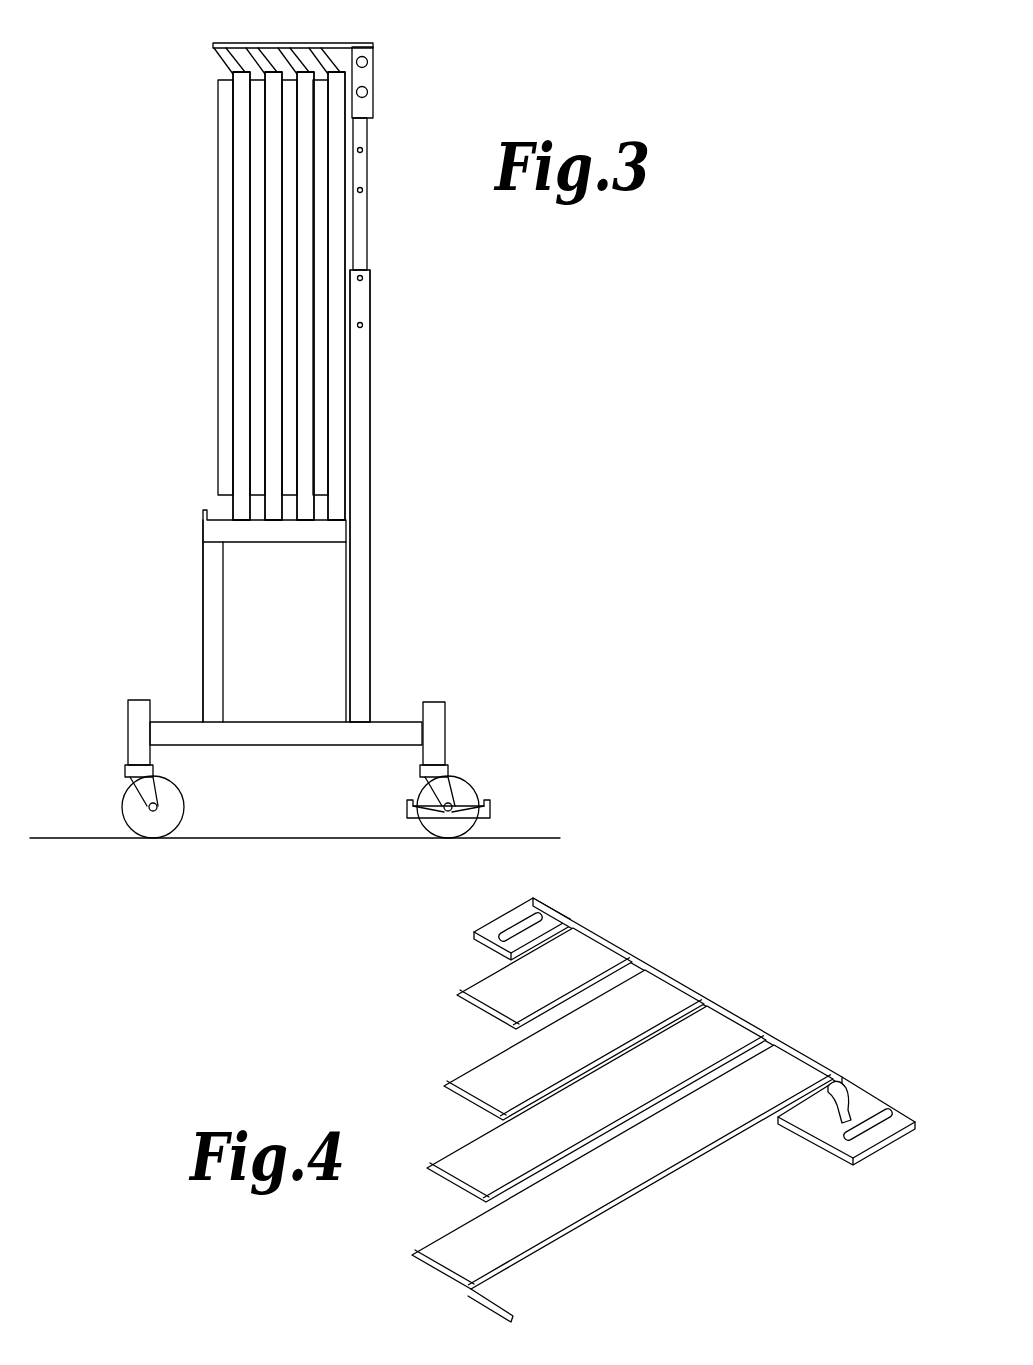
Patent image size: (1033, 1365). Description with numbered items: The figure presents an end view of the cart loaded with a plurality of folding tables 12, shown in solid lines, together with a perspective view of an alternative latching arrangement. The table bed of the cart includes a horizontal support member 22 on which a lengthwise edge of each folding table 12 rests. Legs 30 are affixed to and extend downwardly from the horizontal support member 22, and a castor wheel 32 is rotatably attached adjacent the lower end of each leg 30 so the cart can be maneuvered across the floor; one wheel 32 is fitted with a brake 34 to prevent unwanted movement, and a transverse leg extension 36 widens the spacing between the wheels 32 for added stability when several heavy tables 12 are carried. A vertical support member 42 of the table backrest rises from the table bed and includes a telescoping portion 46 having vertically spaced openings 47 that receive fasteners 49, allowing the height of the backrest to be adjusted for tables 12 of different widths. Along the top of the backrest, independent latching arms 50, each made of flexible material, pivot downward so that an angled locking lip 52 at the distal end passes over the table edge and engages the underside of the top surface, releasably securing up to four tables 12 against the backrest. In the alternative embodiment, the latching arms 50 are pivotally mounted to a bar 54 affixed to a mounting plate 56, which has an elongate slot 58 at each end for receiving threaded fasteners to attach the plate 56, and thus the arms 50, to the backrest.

In FIG. 3, the folding table 12 is at (233, 143).
In FIG. 3, the horizontal support member 22 is at (269, 543).
In FIG. 3, the leg 30 is at (203, 607).
In FIG. 3, the castor wheel 32 is at (150, 838).
In FIG. 3, the brake 34 is at (490, 805).
In FIG. 3, the transverse leg extension 36 is at (278, 745).
In FIG. 3, the vertical support member 42 is at (369, 420).
In FIG. 3, the telescoping portion 46 is at (368, 211).
In FIG. 3, the vertically spaced opening 47 is at (364, 152).
In FIG. 3, the fastener 49 is at (363, 325).
In FIG. 3, the latching arm 50 is at (316, 43).
In FIG. 4, the latching arm 50 is at (478, 985).
In FIG. 3, the locking lip 52 is at (220, 58).
In FIG. 4, the locking lip 52 is at (480, 1310).
In FIG. 4, the bar 54 is at (838, 1083).
In FIG. 4, the mounting plate 56 is at (817, 1139).
In FIG. 4, the elongate slot 58 is at (536, 905).